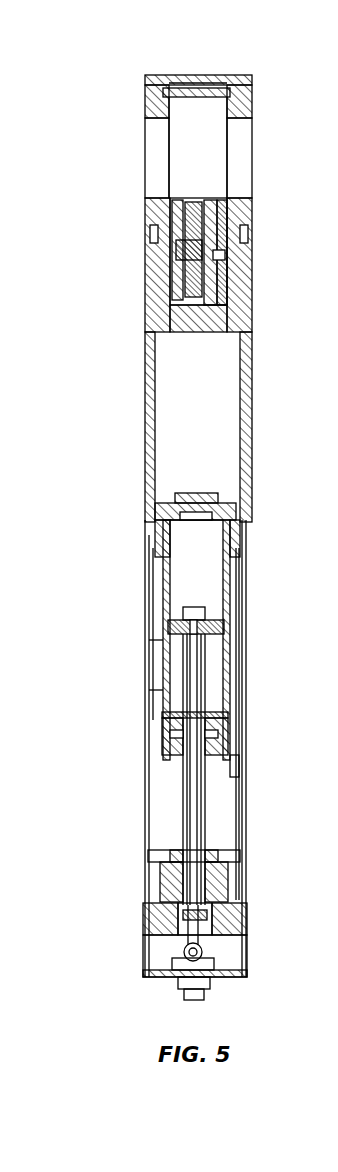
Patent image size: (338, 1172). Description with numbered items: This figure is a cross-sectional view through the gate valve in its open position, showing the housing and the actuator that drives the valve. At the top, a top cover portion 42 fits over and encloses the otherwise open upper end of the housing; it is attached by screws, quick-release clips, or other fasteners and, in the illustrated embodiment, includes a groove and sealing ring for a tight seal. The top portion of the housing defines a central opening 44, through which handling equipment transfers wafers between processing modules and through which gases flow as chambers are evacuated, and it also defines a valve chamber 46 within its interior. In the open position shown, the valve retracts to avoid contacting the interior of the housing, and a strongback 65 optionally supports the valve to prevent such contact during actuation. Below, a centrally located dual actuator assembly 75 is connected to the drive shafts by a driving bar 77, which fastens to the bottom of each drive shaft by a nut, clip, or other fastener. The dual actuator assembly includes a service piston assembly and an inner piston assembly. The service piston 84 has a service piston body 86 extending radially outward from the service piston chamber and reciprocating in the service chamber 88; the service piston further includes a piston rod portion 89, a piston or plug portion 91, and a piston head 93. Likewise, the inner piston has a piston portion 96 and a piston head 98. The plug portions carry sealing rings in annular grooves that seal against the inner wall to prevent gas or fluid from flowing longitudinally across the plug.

The top cover portion 42 is at (237, 91).
The central opening 44 is at (150, 146).
The valve chamber 46 is at (196, 116).
The strongback 65 is at (195, 202).
The dual actuator assembly 75 is at (150, 648).
The driving bar 77 is at (233, 883).
The service piston 84 is at (150, 498).
The service piston body 86 is at (241, 748).
The service chamber 88 is at (224, 366).
The piston rod portion 89 is at (157, 573).
The piston or plug portion 91 is at (237, 511).
The piston head 93 is at (216, 494).
The piston portion 96 is at (220, 641).
The piston head 98 is at (200, 612).